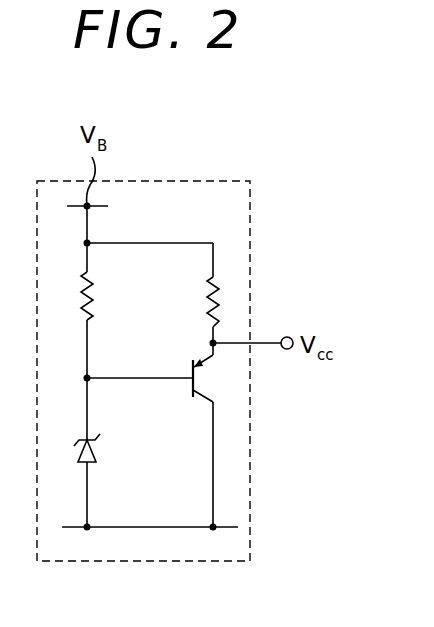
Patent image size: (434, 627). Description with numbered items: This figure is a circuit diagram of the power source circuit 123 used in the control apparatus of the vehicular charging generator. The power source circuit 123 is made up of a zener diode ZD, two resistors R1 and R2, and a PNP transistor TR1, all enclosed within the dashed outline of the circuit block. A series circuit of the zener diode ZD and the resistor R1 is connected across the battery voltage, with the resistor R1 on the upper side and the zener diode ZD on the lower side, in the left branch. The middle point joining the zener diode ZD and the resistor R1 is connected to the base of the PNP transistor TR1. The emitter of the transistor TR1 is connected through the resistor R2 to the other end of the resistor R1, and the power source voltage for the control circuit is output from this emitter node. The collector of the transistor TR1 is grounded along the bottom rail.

The power source circuit 123 is at (250, 485).
The PNP transistor TR1 is at (216, 378).
The resistor R1 is at (103, 296).
The resistor R2 is at (192, 302).
The zener diode ZD is at (108, 453).